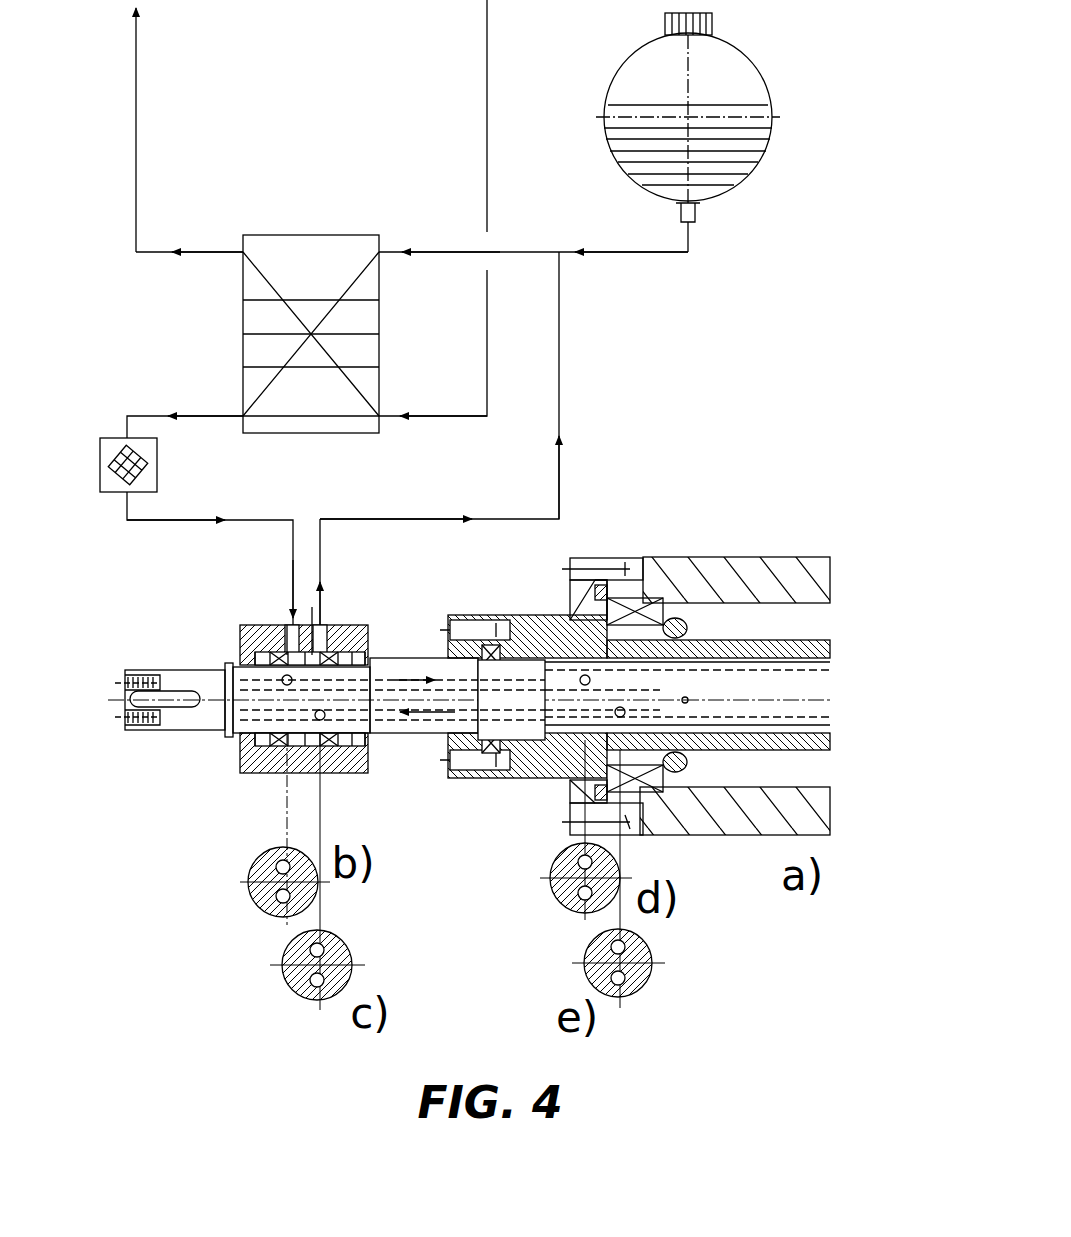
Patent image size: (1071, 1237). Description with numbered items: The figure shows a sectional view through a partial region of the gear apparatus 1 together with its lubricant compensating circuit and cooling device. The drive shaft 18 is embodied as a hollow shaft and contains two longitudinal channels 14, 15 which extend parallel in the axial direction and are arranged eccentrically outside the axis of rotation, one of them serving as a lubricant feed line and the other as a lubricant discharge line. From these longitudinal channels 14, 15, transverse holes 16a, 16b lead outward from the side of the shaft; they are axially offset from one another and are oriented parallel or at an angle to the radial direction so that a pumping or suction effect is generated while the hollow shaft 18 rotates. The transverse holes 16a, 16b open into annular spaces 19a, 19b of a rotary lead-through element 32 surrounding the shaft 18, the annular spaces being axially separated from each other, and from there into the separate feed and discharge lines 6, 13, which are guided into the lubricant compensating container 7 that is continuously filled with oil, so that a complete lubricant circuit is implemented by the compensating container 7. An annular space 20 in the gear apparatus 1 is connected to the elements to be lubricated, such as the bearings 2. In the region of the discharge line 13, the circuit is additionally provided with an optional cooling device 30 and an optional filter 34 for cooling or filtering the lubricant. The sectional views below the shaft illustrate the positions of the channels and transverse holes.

The gear apparatus 1 is at (640, 545).
The bearings 2 is at (677, 628).
The feed line 6 is at (560, 358).
The lubricant compensating container 7 is at (762, 157).
The discharge line 13 is at (298, 545).
The longitudinal channel 14 is at (548, 880).
The longitudinal channel 15 is at (563, 905).
The transverse hole 16a is at (305, 853).
The transverse hole 16b is at (350, 980).
The drive shaft 18 is at (248, 728).
The annular space 19a is at (258, 625).
The annular space 19b is at (330, 625).
The annular space 20 is at (730, 656).
The cooling device 30 is at (290, 235).
The rotary lead-through element 32 is at (372, 642).
The filter 34 is at (113, 438).